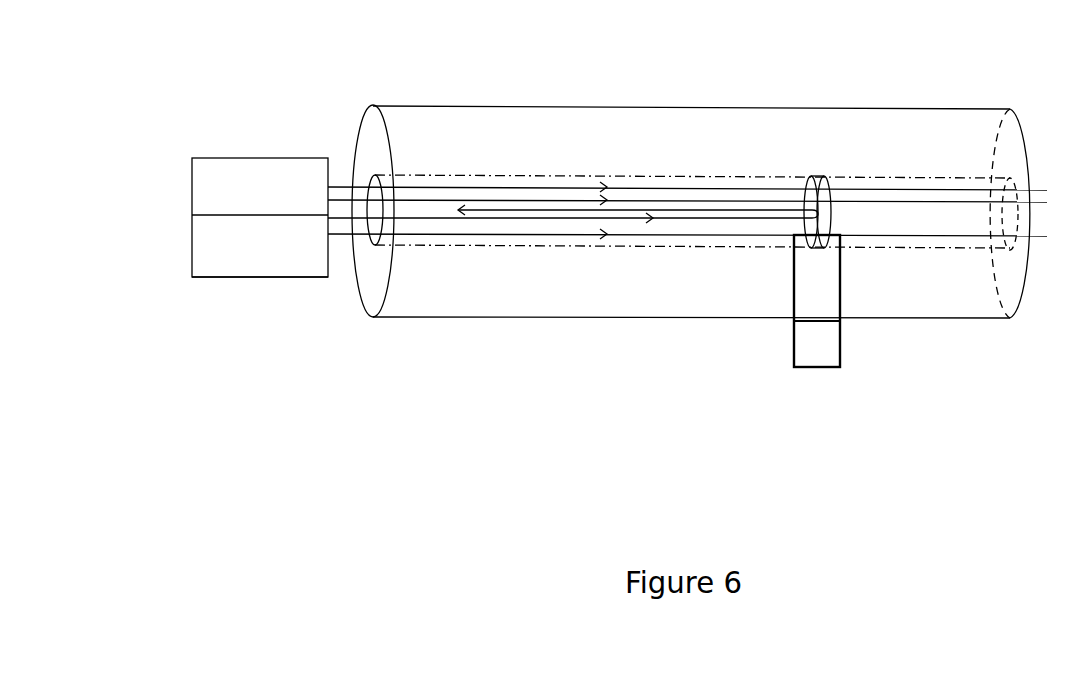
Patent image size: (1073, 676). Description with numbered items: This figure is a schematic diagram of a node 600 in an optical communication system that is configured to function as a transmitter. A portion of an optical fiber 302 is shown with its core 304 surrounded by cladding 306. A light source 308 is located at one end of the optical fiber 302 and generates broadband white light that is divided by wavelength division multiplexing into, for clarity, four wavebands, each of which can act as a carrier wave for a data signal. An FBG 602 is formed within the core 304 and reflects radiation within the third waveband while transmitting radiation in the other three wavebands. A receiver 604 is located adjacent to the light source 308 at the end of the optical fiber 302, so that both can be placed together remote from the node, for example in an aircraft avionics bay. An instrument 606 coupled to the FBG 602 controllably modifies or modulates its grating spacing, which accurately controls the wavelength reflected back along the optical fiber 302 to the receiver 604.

The optical fiber 302 is at (965, 318).
The core 304 is at (928, 178).
The cladding 306 is at (973, 115).
The light source 308 is at (207, 165).
The node 600 is at (348, 367).
The FBG 602 is at (813, 178).
The receiver 604 is at (215, 273).
The instrument 606 is at (805, 360).